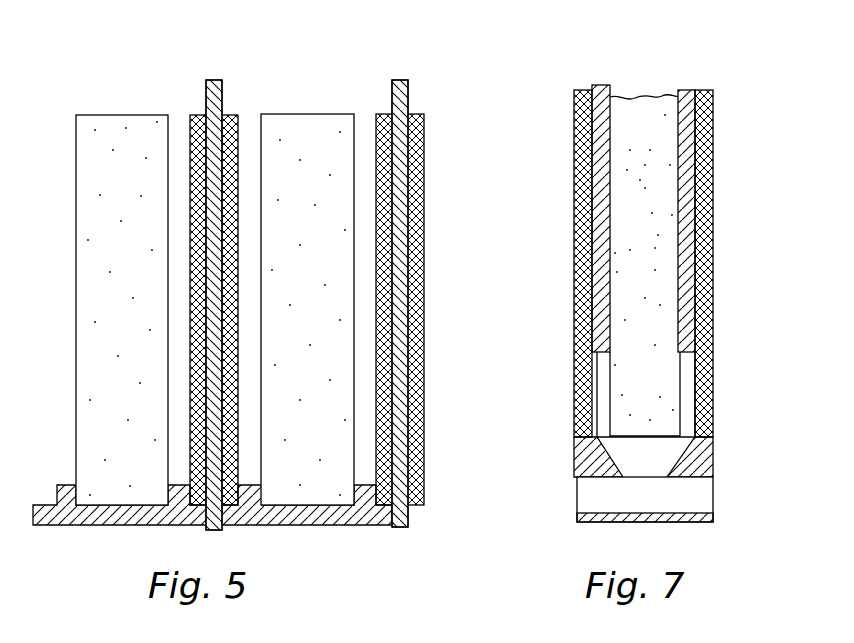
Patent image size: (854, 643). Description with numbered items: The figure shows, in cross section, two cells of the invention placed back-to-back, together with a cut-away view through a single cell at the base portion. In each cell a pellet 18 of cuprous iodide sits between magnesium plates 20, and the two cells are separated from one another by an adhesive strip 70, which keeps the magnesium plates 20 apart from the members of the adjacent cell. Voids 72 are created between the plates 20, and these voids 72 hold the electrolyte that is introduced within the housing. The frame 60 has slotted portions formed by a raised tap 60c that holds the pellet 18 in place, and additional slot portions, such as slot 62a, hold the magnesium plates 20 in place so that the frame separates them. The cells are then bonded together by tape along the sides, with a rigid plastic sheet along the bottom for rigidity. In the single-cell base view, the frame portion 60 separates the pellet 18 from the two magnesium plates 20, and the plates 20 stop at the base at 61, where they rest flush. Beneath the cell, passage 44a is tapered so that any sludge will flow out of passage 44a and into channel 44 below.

In FIG. 5, the pellet 18 is at (105, 115).
In FIG. 7, the pellet 18 is at (650, 398).
In FIG. 5, the magnesium plates 20 is at (375, 108).
In FIG. 7, the magnesium plates 20 is at (713, 238).
In FIG. 5, the adhesive strip 70 is at (214, 80).
In FIG. 5, the voids 72 is at (367, 215).
In FIG. 5, the frame 60 is at (338, 525).
In FIG. 7, the frame 60 is at (713, 330).
In FIG. 5, the raised tap 60c is at (66, 492).
In FIG. 5, the slot 62a is at (378, 525).
In FIG. 7, the base stop 61 is at (713, 438).
In FIG. 7, the passage 44a is at (645, 462).
In FIG. 7, the channel 44 is at (590, 500).